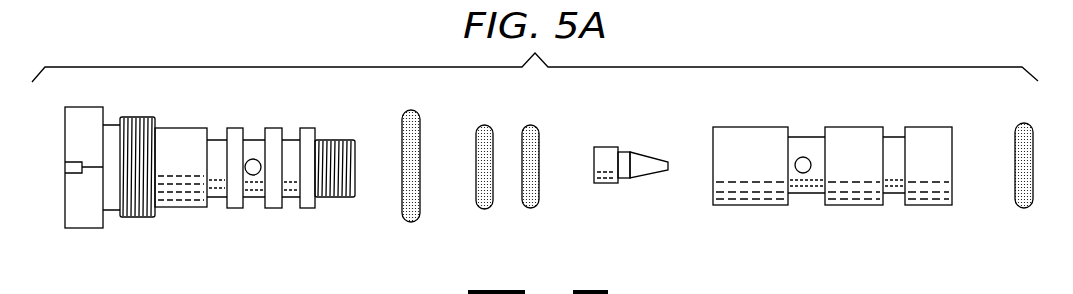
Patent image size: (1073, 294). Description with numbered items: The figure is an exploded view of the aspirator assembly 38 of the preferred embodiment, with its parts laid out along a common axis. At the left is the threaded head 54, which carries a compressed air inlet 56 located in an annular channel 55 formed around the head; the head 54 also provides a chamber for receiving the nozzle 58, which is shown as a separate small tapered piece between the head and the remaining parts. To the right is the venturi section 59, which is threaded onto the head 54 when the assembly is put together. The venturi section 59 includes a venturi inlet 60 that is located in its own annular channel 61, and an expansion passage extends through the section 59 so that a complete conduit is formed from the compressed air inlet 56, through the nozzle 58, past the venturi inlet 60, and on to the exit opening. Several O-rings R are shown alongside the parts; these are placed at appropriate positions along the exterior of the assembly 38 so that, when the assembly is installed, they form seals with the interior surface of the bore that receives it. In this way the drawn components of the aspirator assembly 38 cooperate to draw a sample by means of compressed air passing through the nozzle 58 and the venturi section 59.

The aspirator assembly 38 is at (210, 183).
The threaded head 54 is at (143, 118).
The annular channel 55 is at (263, 132).
The compressed air inlet 56 is at (253, 176).
The nozzle 58 is at (609, 150).
The venturi section 59 is at (832, 169).
The venturi inlet 60 is at (804, 174).
The annular channel 61 is at (789, 132).
The O-rings R is at (420, 197).